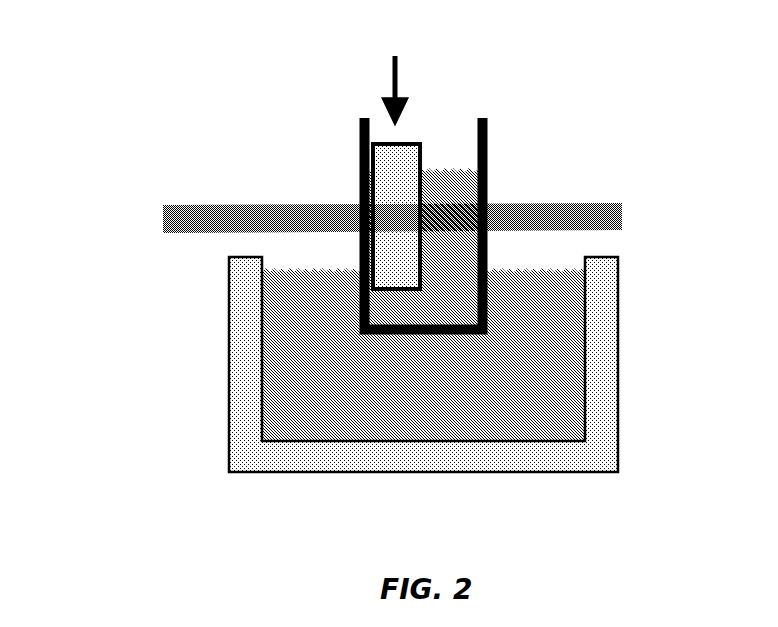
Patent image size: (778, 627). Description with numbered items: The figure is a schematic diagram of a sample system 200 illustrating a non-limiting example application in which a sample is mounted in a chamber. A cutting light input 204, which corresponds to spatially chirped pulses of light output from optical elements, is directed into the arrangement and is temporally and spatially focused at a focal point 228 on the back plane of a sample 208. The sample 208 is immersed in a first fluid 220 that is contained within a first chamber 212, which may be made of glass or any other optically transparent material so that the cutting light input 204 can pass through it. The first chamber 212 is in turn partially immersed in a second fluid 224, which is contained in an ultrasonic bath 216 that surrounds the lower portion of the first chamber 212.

The sample system 200 is at (393, 242).
The cutting light input 204 is at (110, 218).
The sample 208 is at (400, 79).
The first chamber 212 is at (417, 171).
The ultrasonic bath 216 is at (648, 363).
The first fluid 220 is at (438, 166).
The second fluid 224 is at (548, 266).
The focal point 228 is at (415, 212).